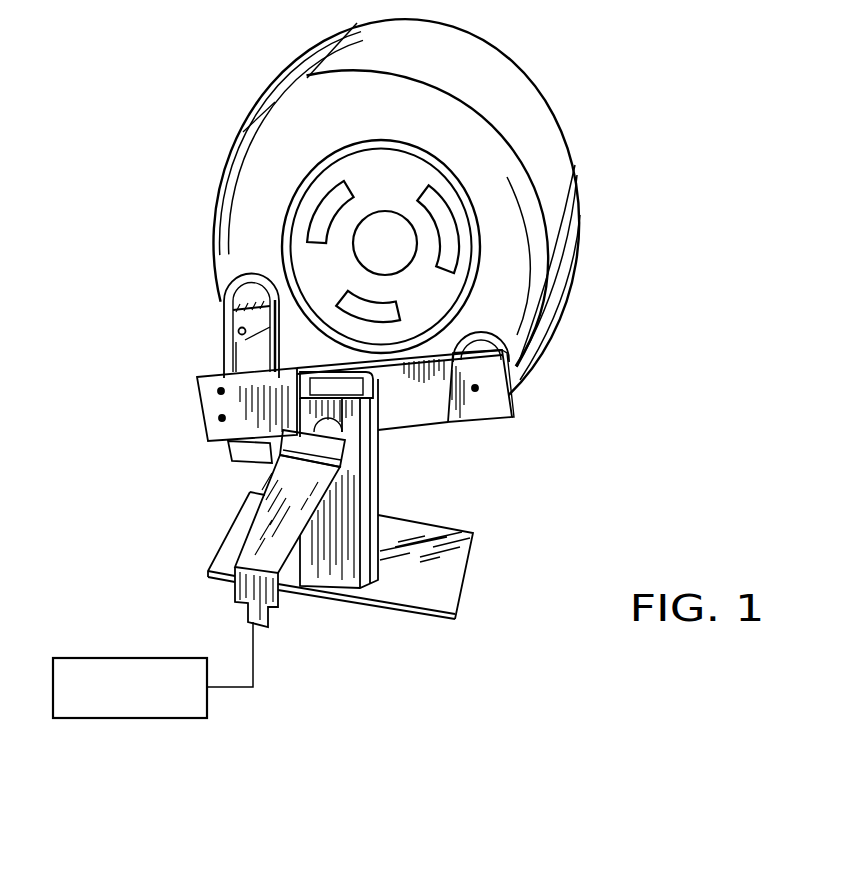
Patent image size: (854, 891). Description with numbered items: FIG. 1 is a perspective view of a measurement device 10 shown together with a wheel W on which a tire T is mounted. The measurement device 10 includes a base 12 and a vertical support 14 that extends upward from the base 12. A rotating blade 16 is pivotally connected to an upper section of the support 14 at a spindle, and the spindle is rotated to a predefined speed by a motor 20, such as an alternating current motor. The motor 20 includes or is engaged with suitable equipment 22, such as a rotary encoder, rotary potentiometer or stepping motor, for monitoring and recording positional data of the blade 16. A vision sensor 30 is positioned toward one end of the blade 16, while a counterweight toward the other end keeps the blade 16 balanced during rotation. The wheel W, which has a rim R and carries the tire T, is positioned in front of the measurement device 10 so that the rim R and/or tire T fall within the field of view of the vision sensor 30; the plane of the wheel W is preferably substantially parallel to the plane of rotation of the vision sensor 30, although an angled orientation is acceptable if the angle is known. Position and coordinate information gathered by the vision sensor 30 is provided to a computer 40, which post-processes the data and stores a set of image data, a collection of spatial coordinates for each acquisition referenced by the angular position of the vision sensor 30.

The tire T is at (488, 162).
The rim R is at (277, 210).
The wheel W is at (333, 258).
The vision sensor 30 is at (226, 350).
The measurement device 10 is at (194, 421).
The rotating blade 16 is at (484, 408).
The vertical support 14 is at (350, 537).
The base 12 is at (447, 595).
The motor 20 is at (319, 558).
The equipment for monitoring and recording positional data 22 is at (268, 590).
The computer 40 is at (115, 714).